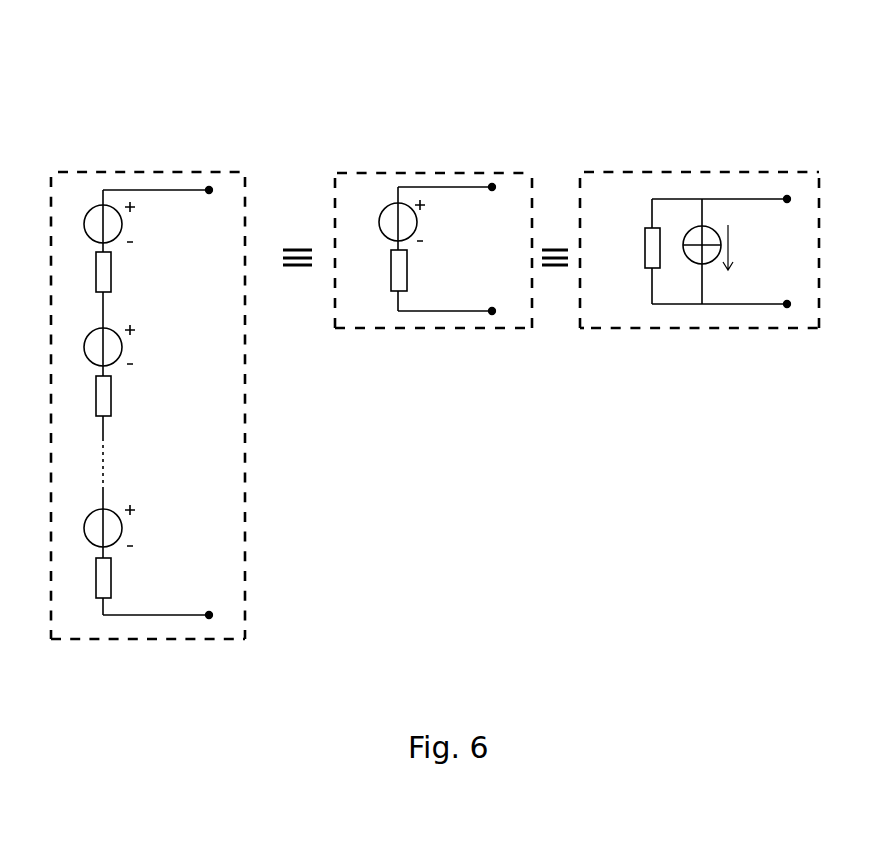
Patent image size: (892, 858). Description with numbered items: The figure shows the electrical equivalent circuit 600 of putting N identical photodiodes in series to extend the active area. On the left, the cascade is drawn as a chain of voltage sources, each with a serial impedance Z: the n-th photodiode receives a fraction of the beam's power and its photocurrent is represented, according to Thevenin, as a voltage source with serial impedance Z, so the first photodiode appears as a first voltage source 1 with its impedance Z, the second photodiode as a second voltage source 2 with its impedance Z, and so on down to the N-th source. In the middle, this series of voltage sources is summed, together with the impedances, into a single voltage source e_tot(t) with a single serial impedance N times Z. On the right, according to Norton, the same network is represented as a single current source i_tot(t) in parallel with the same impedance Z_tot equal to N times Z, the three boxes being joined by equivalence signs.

The equivalent circuit diagram of series-connected voltage sources with impedances 600 is at (435, 327).
The first voltage source e1(t) with series impedance Z 1 is at (130, 250).
The second voltage source e2(t) with series impedance Z 2 is at (130, 374).